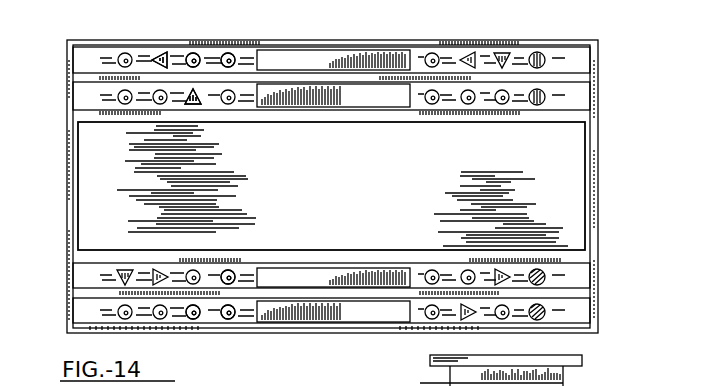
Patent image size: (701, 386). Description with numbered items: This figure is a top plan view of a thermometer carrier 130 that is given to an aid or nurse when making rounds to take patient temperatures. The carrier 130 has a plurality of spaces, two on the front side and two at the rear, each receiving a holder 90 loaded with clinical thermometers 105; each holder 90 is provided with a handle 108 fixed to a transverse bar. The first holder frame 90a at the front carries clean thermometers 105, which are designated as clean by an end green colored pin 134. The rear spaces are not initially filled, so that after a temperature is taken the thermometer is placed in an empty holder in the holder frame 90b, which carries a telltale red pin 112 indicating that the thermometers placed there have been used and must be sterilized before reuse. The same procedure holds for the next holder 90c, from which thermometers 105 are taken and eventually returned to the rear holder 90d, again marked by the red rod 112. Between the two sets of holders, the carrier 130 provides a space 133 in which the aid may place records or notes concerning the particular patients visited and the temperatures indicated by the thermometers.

The holder 90 is at (368, 380).
The first holder frame 90a is at (580, 316).
The holder frame 90b is at (580, 58).
The holder 90c is at (585, 280).
The holder 90d is at (580, 100).
The thermometers 105 is at (195, 92).
The handle 108 is at (372, 92).
The rod 112 is at (540, 92).
The carrier 130 is at (62, 183).
The space 133 is at (565, 148).
The green colored pin 134 is at (534, 286).